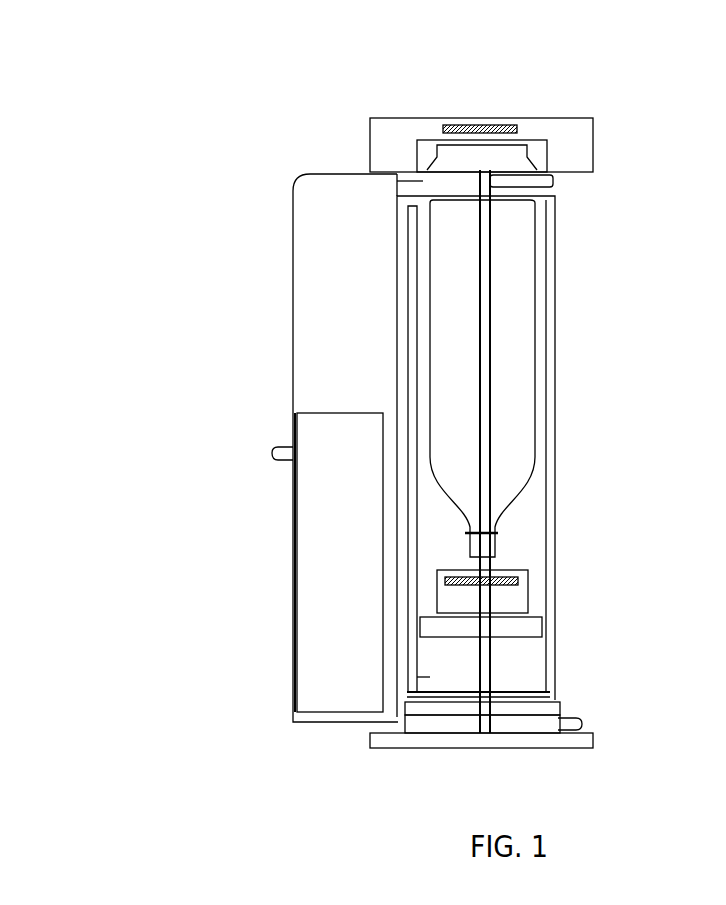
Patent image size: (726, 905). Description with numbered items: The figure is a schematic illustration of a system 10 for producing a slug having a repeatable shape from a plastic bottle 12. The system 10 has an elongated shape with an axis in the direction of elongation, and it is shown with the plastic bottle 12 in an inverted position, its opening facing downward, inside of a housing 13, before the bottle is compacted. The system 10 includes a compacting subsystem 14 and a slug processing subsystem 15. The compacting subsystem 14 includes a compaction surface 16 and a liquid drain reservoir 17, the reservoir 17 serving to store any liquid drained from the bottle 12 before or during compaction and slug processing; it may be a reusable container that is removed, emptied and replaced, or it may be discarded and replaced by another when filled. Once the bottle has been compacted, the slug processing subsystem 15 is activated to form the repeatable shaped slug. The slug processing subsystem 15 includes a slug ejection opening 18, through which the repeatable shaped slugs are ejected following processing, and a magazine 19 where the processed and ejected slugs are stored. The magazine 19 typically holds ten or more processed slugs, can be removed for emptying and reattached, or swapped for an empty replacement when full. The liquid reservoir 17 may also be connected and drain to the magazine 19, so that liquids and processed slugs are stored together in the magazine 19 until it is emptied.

The system 10 is at (104, 71).
The plastic bottle 12 is at (430, 325).
The housing 13 is at (557, 280).
The compacting subsystem 14 is at (615, 556).
The slug processing subsystem 15 is at (623, 96).
The compaction surface 16 is at (530, 570).
The liquid drain reservoir 17 is at (430, 677).
The slug ejection opening 18 is at (396, 190).
The magazine 19 is at (293, 527).